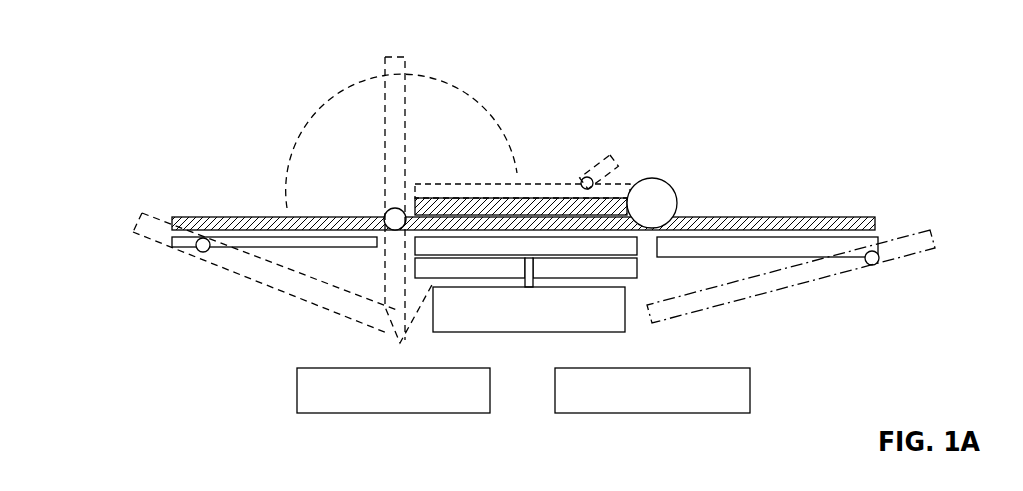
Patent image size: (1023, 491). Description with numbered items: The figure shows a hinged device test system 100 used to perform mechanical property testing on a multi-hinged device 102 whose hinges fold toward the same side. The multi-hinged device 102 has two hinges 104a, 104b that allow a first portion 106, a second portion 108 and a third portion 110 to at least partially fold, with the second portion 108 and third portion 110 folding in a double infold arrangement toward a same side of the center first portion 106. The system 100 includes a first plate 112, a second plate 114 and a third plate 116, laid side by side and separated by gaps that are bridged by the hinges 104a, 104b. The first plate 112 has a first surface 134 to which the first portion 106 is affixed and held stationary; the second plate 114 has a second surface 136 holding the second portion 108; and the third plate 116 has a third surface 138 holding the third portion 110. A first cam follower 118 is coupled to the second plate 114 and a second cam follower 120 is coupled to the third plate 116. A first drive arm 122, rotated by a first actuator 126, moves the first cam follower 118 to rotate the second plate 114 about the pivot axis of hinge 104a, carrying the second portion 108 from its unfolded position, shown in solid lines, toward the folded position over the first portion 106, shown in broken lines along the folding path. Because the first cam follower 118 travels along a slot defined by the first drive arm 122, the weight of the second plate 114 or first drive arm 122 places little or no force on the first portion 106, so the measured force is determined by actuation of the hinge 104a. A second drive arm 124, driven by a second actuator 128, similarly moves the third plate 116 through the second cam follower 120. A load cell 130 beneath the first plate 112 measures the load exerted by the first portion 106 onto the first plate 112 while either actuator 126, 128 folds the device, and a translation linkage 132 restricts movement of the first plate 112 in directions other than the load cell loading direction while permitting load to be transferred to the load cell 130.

The hinged device test system 100 is at (116, 58).
The multi-hinged device 102 is at (156, 154).
The hinge 104a is at (386, 214).
The hinge 104b is at (668, 207).
The first portion 106 is at (485, 220).
The second portion 108 is at (205, 217).
The third portion 110 is at (857, 230).
The first plate 112 is at (637, 249).
The second plate 114 is at (263, 247).
The third plate 116 is at (780, 250).
The first cam follower 118 is at (203, 252).
The second cam follower 120 is at (878, 264).
The first drive arm 122 is at (400, 57).
The second drive arm 124 is at (925, 232).
The first actuator 126 is at (372, 413).
The second actuator 128 is at (672, 413).
The load cell 130 is at (518, 333).
The translation linkage 132 is at (628, 278).
The first surface 134 is at (433, 237).
The second surface 136 is at (258, 230).
The third surface 138 is at (447, 205).